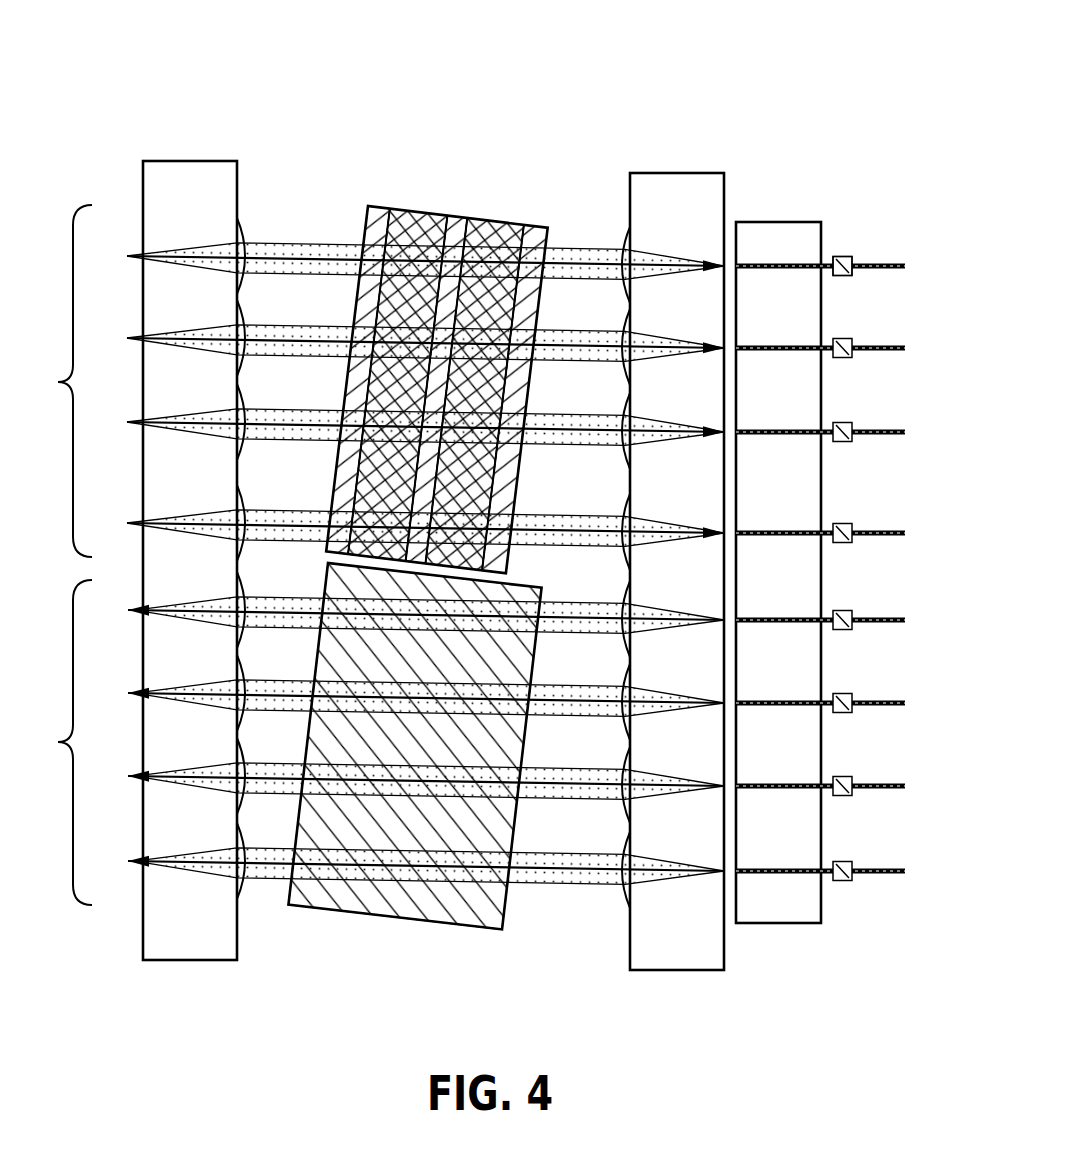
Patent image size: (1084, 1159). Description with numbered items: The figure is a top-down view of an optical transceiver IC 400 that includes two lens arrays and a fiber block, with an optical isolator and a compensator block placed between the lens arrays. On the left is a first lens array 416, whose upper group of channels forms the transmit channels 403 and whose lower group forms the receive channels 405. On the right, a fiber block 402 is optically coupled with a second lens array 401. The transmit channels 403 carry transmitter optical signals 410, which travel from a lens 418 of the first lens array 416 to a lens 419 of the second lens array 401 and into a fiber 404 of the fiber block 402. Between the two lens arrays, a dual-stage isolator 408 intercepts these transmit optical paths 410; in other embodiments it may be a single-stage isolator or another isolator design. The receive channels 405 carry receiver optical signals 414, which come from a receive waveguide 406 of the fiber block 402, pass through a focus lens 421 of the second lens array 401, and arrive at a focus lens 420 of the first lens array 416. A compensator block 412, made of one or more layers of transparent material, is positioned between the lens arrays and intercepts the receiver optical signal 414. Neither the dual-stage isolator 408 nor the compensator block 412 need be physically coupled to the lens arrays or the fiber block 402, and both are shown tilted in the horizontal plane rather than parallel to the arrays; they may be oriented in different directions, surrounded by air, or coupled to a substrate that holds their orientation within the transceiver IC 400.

The transceiver IC 400 is at (746, 68).
The second lens array 401 is at (683, 173).
The fiber block 402 is at (783, 222).
The transmit channels 403 is at (66, 381).
The fiber 404 is at (803, 262).
The receive channels 405 is at (64, 742).
The receive waveguide 406 is at (773, 878).
The dual-stage isolator 408 is at (427, 213).
The transmitter optical signals 410 is at (300, 250).
The compensator block 412 is at (448, 929).
The receiver optical signals 414 is at (270, 880).
The first lens array 416 is at (205, 161).
The lens 418 is at (243, 236).
The lens 419 is at (628, 290).
The focus lens 420 is at (245, 894).
The focus lens 421 is at (625, 896).